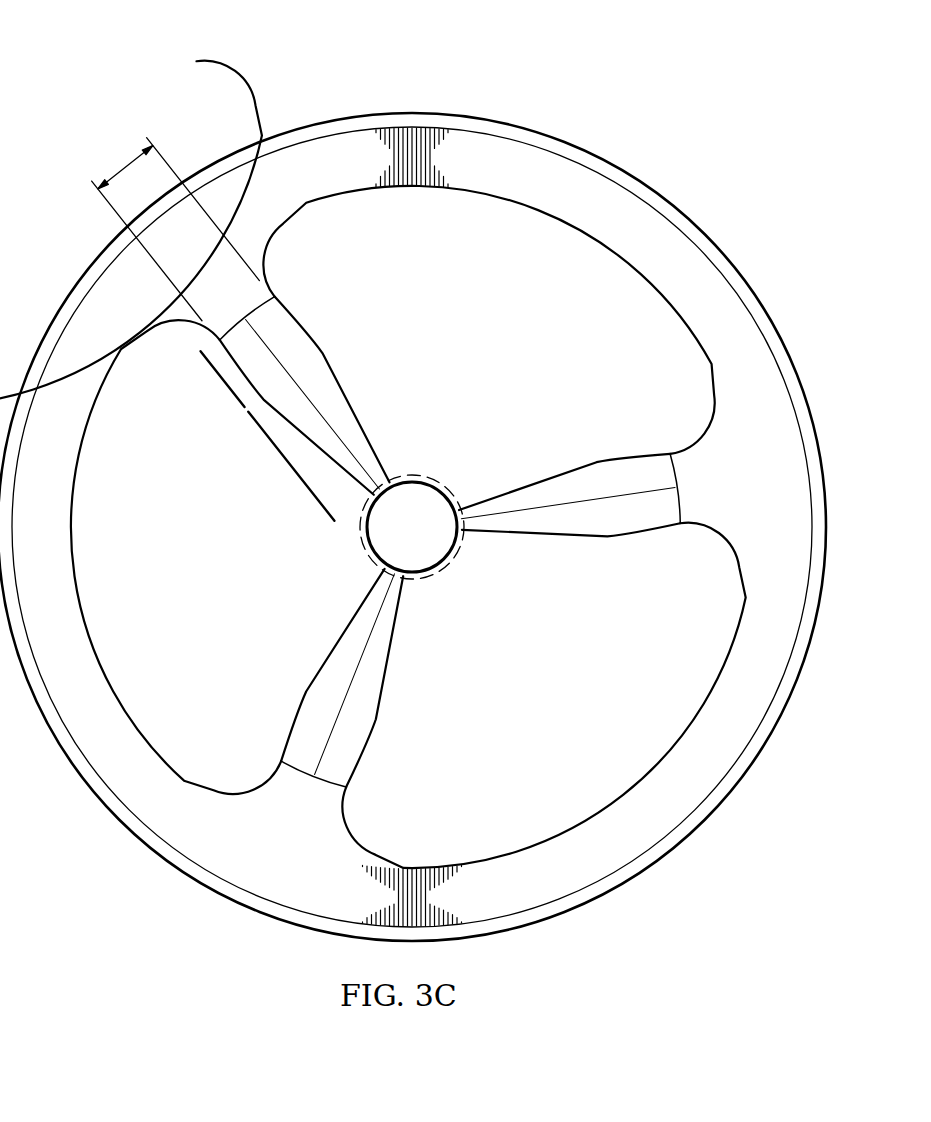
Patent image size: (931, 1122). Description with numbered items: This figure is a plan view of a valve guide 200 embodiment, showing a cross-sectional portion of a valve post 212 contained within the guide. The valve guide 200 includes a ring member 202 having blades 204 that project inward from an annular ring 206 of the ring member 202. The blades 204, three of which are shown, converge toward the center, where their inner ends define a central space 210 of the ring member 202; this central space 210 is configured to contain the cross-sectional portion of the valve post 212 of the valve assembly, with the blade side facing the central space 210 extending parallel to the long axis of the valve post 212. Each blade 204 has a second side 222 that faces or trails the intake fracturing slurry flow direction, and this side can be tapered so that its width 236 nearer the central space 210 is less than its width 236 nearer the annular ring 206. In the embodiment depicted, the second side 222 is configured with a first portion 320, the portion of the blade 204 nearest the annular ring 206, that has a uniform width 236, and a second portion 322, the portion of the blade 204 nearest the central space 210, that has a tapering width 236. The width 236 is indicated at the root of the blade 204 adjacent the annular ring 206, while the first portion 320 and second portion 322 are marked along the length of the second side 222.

The valve guide 200 is at (250, 55).
The ring member 202 is at (655, 134).
The blades 204 is at (336, 328).
The annular ring 206 is at (362, 113).
The central space 210 is at (445, 594).
The valve post 212 is at (382, 541).
The second side 222 is at (246, 319).
The width 236 is at (128, 170).
The first portion 320 is at (221, 382).
The second portion 322 is at (290, 469).